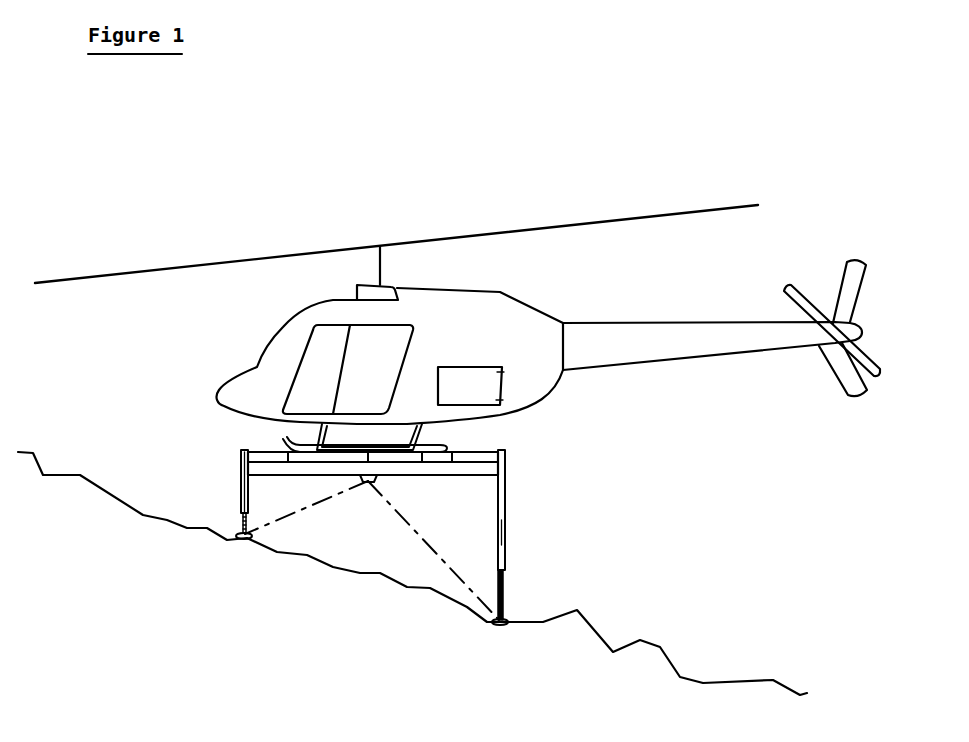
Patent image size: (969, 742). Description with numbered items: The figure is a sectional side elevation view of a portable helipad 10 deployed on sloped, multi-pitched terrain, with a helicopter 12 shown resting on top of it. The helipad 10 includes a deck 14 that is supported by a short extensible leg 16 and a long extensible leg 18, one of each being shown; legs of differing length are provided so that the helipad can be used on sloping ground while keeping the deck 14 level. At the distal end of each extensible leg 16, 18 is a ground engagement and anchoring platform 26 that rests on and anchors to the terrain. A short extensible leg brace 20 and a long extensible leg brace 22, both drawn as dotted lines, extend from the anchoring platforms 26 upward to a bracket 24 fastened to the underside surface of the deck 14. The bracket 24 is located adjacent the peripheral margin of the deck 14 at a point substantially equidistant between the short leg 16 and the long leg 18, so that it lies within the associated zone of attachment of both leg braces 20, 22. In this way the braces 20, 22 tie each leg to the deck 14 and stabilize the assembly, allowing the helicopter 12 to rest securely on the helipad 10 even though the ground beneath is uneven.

The portable helipad 10 is at (543, 512).
The helicopter 12 is at (262, 330).
The deck 14 is at (504, 452).
The short extensible leg 16 is at (242, 492).
The long extensible leg 18 is at (505, 548).
The short extensible leg brace 20 is at (305, 510).
The long extensible leg brace 22 is at (443, 562).
The bracket 24 is at (366, 484).
The ground engagement and anchoring platform 26 is at (242, 540).